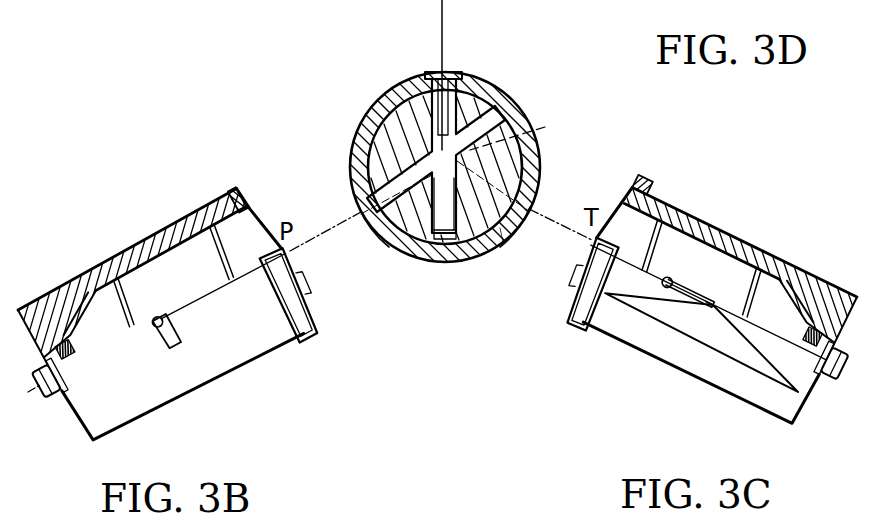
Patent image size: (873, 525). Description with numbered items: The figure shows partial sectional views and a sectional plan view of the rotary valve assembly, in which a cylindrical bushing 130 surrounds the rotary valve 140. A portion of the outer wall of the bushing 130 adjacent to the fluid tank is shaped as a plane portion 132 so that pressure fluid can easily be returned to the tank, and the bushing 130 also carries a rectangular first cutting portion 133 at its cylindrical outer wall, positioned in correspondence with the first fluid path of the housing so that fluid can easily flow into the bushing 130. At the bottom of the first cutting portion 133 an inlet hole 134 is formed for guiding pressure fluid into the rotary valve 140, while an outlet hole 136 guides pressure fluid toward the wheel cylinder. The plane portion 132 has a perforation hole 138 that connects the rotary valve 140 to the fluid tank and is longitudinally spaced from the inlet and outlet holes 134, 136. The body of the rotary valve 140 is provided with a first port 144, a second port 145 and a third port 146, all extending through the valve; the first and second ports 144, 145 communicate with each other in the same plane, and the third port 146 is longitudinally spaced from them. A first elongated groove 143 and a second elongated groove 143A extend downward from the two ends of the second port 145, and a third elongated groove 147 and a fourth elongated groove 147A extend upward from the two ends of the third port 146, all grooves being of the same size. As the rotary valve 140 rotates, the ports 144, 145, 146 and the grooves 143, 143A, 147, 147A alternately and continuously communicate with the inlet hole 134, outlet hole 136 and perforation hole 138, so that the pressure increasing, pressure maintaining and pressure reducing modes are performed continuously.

In FIG. 3D, the bushing 130 is at (372, 118).
In FIG. 3B, the bushing 130 is at (218, 207).
In FIG. 3C, the bushing 130 is at (800, 245).
In FIG. 3C, the plane portion 132 is at (703, 332).
In FIG. 3B, the first cutting portion 133 is at (163, 338).
In FIG. 3D, the inlet hole 134 is at (373, 230).
In FIG. 3B, the inlet hole 134 is at (172, 318).
In FIG. 3D, the outlet hole 136 is at (435, 71).
In FIG. 3D, the perforation hole 138 is at (520, 213).
In FIG. 3C, the perforation hole 138 is at (660, 290).
In FIG. 3D, the rotary valve 140 is at (375, 130).
In FIG. 3B, the rotary valve 140 is at (158, 277).
In FIG. 3C, the rotary valve 140 is at (760, 257).
In FIG. 3D, the first elongated groove 143 is at (458, 80).
In FIG. 3D, the second elongated groove 143A is at (447, 241).
In FIG. 3D, the first port 144 is at (421, 252).
In FIG. 3B, the first port 144 is at (122, 262).
In FIG. 3D, the second port 145 is at (495, 100).
In FIG. 3D, the third port 146 is at (545, 127).
In FIG. 3C, the third port 146 is at (694, 278).
In FIG. 3D, the third elongated groove 147 is at (503, 232).
In FIG. 3C, the third elongated groove 147 is at (735, 268).
In FIG. 3D, the fourth elongated groove 147A is at (362, 135).